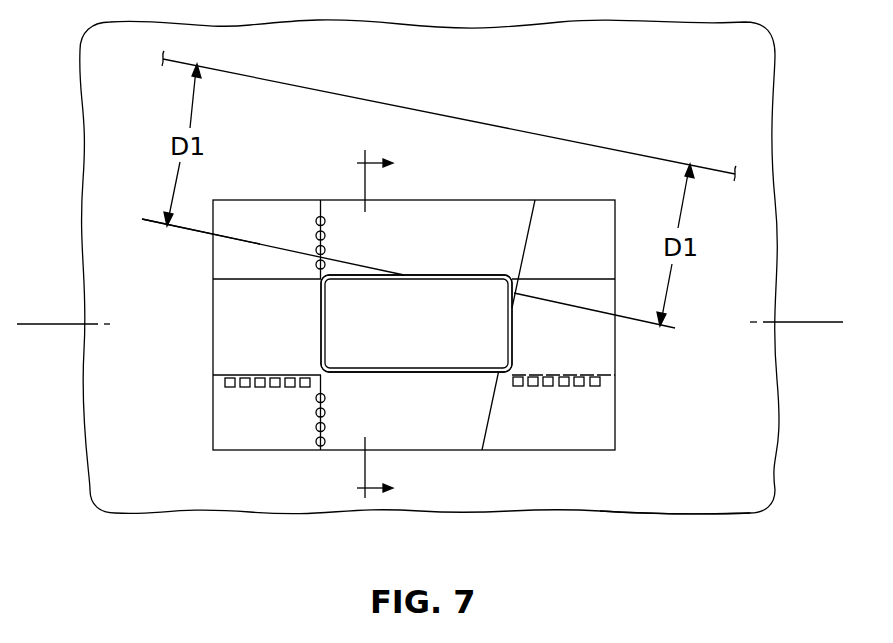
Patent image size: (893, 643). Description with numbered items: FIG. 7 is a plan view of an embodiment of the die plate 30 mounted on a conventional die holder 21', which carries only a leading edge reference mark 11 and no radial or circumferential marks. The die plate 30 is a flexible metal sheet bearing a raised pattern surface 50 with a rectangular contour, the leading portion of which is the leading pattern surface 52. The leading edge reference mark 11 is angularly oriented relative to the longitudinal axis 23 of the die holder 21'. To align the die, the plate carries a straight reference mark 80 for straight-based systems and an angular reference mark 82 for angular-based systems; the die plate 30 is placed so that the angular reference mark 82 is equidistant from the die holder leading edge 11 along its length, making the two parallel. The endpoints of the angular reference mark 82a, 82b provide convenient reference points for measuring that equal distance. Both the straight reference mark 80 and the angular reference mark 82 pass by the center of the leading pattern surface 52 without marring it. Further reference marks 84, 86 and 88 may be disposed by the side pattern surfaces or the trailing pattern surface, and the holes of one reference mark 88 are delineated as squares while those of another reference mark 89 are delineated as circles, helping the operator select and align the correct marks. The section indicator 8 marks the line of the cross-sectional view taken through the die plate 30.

The leading edge reference mark 11 is at (663, 158).
The die holder 21' is at (675, 529).
The longitudinal axis 23 is at (50, 323).
The die plate 30 is at (248, 452).
The pattern surface 50 is at (321, 342).
The leading pattern surface 52 is at (432, 281).
The straight reference mark 80 is at (243, 281).
The angular reference mark 82 is at (233, 241).
The endpoint of angular reference mark 82a is at (213, 233).
The endpoint of angular reference mark 82b is at (622, 316).
The reference mark 84 is at (517, 232).
The reference mark 86 is at (326, 243).
The reference mark 88 is at (578, 386).
The reference mark 89 is at (326, 427).
The section view indicator 8 is at (365, 326).